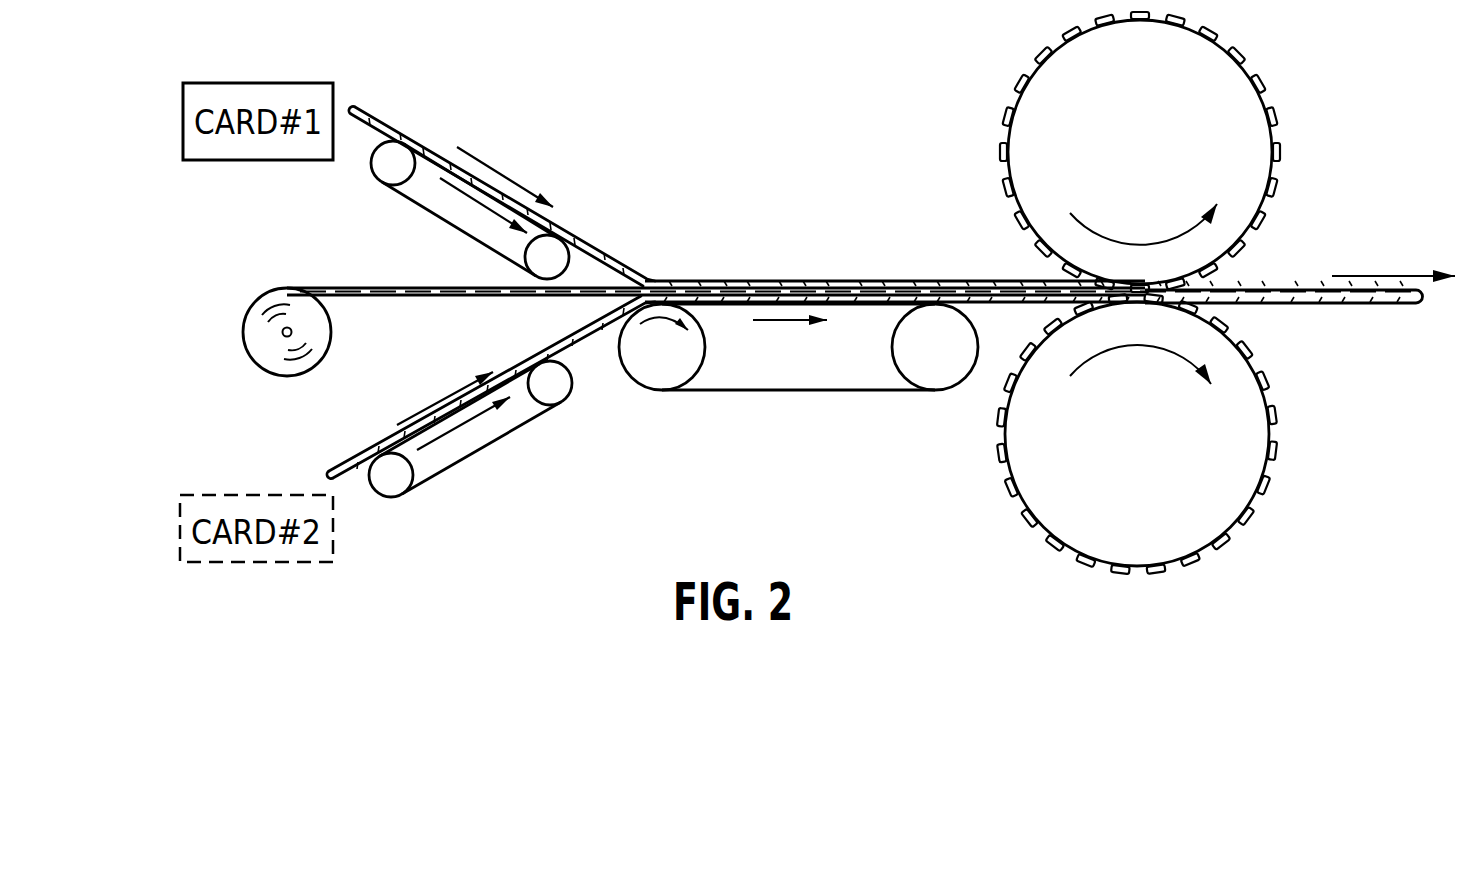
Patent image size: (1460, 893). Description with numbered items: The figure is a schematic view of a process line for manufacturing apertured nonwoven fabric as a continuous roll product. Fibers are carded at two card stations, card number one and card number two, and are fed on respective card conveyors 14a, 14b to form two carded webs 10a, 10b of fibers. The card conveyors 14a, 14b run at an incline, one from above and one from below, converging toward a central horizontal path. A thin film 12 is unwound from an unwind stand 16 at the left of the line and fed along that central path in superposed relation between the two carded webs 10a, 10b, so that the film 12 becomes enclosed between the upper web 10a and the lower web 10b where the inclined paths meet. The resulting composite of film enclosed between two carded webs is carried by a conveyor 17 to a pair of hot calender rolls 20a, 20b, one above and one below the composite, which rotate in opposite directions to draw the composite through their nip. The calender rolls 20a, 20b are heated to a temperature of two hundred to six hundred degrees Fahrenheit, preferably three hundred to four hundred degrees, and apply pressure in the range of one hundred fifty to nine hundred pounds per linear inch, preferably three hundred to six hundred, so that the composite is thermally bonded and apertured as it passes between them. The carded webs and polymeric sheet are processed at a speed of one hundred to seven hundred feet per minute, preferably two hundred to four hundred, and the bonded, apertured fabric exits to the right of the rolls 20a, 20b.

The carded web of fibers 10a is at (413, 141).
The carded web of fibers 10b is at (385, 446).
The thin film 12 is at (320, 286).
The card conveyor 14a is at (425, 195).
The card conveyor 14b is at (485, 440).
The unwind stand 16 is at (283, 334).
The conveyor 17 is at (770, 367).
The hot calender roll 20a is at (1226, 126).
The hot calender roll 20b is at (1212, 478).